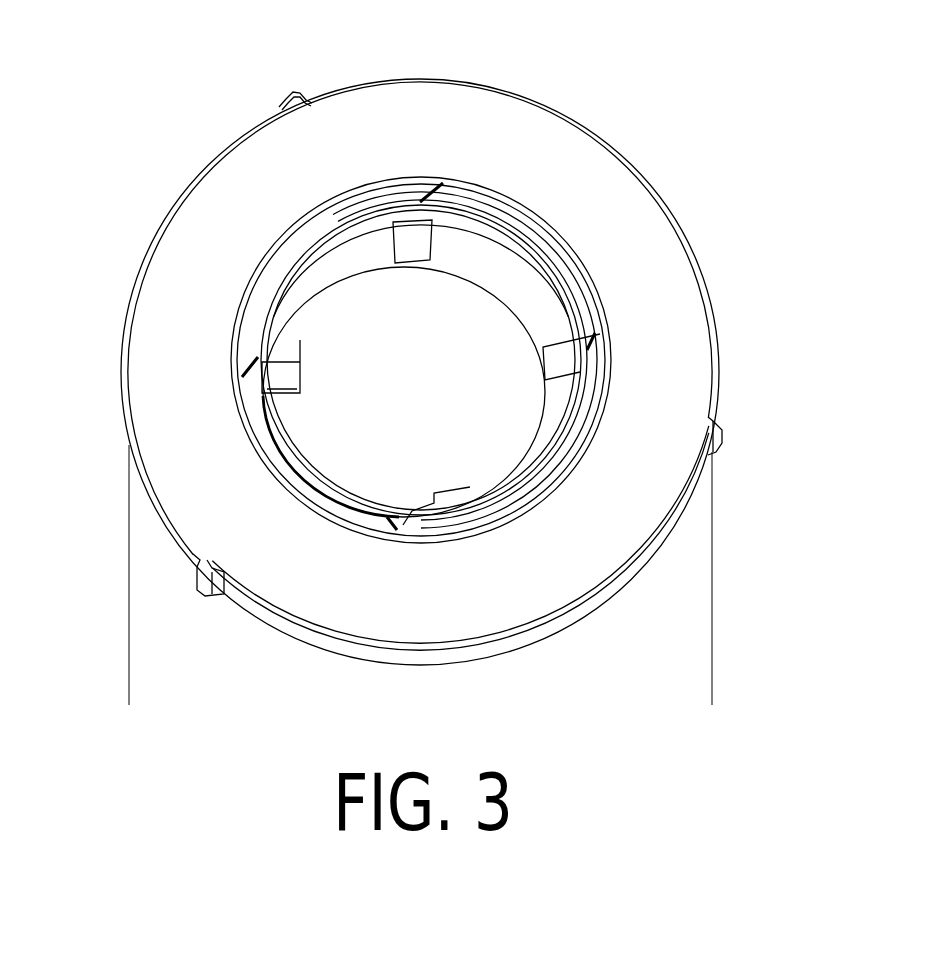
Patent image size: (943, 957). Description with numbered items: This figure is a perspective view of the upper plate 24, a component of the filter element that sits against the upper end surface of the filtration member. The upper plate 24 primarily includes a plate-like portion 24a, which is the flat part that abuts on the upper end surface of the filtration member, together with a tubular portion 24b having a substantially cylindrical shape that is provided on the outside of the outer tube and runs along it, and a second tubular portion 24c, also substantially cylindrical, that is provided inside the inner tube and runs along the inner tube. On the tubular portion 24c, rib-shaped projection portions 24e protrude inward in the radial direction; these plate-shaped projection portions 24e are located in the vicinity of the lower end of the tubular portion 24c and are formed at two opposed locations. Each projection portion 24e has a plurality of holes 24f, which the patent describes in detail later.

The upper plate 24 is at (423, 364).
The plate-like portion 24a is at (207, 240).
The tubular portion 24b is at (152, 503).
The tubular portion 24c is at (500, 240).
The projection portions 24e is at (412, 243).
The holes 24f is at (290, 262).